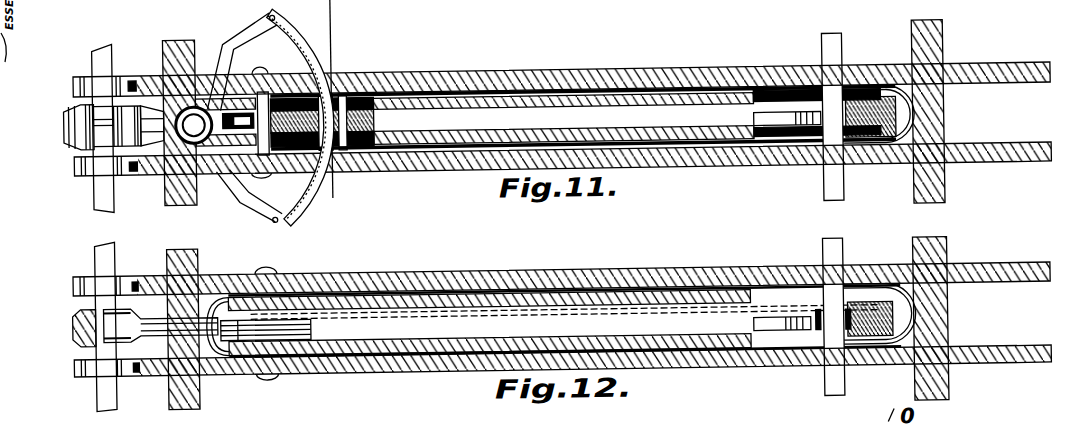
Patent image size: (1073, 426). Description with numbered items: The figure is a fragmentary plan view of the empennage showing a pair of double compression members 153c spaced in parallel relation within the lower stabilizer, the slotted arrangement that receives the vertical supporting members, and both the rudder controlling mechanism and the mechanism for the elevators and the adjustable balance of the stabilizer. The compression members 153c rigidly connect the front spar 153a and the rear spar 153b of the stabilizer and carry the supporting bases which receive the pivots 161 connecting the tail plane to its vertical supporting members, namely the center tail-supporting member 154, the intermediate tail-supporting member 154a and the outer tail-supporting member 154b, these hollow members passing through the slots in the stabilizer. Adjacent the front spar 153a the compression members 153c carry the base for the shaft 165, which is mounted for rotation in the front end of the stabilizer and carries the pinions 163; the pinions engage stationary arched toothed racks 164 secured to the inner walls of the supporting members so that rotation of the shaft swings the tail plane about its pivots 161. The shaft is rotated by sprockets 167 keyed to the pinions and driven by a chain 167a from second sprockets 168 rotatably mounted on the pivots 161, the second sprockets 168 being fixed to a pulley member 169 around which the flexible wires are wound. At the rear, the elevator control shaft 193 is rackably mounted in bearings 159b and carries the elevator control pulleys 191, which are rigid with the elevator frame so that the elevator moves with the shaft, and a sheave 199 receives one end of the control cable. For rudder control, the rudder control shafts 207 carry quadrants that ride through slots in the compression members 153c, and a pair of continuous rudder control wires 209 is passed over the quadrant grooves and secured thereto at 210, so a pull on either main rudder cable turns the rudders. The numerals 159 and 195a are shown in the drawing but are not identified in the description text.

In FIG. 11, the front spar 153a is at (935, 209).
In FIG. 12, the front spar 153a is at (947, 251).
In FIG. 11, the rear spar 153b is at (187, 42).
In FIG. 12, the rear spar 153b is at (192, 258).
In FIG. 11, the double compression members 153c is at (700, 86).
In FIG. 12, the double compression members 153c is at (686, 290).
In FIG. 11, the center tail-supporting member 154 is at (437, 108).
In FIG. 11, the outer tail-supporting member 154b is at (430, 142).
In FIG. 12, the intermediate tail-supporting member 154a is at (424, 314).
In FIG. 12, the rod 159 is at (381, 298).
In FIG. 11, the bearings 159b is at (127, 180).
In FIG. 12, the bearings 159b is at (122, 276).
In FIG. 11, the pivots 161 is at (328, 84).
In FIG. 12, the pivots 161 is at (279, 271).
In FIG. 11, the pinions 163 is at (845, 162).
In FIG. 12, the pinions 163 is at (845, 357).
In FIG. 11, the toothed racks 164 is at (791, 156).
In FIG. 12, the toothed racks 164 is at (787, 340).
In FIG. 11, the shaft 165 is at (836, 210).
In FIG. 12, the shaft 165 is at (844, 250).
In FIG. 12, the sprockets 167 is at (913, 331).
In FIG. 12, the chain 167a is at (705, 318).
In FIG. 12, the second sprockets 168 is at (322, 294).
In FIG. 11, the pulley member 169 is at (412, 153).
In FIG. 12, the pulley member 169 is at (312, 364).
In FIG. 11, the elevator control pulleys 191 is at (137, 113).
In FIG. 12, the elevator control pulleys 191 is at (162, 338).
In FIG. 11, the elevator control shaft 193 is at (100, 188).
In FIG. 12, the elevator control shaft 193 is at (97, 253).
In FIG. 12, the rod 195a is at (305, 366).
In FIG. 12, the sheave 199 is at (268, 354).
In FIG. 11, the rudder control shafts 207 is at (195, 109).
In FIG. 11, the rudder control wires 209 is at (331, 200).
In FIG. 11, the wire securing point 210 is at (275, 19).
In FIG. 12, the wire securing point 210 is at (235, 278).